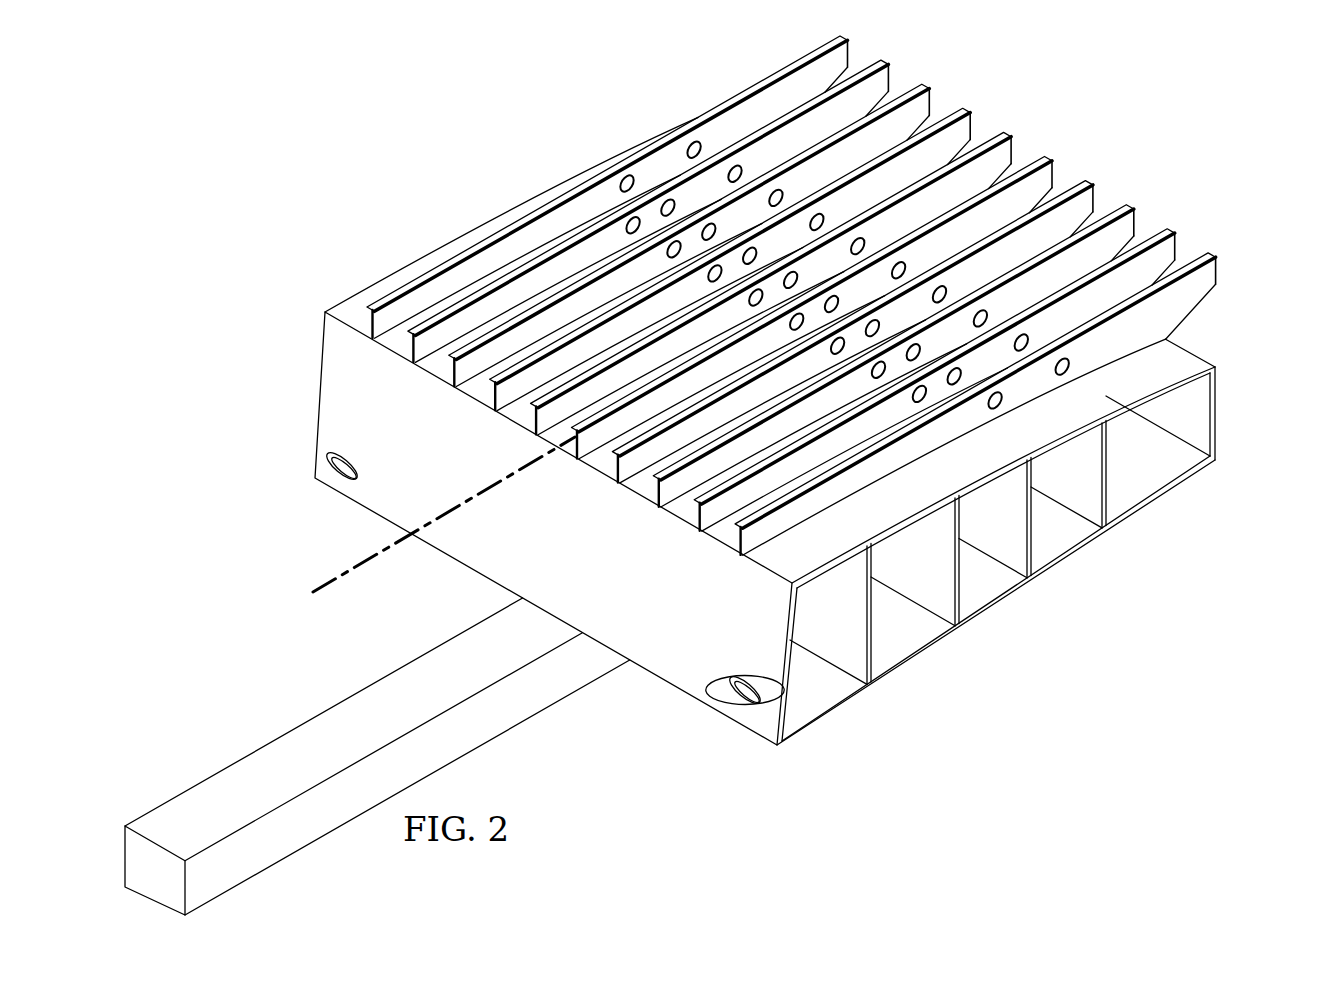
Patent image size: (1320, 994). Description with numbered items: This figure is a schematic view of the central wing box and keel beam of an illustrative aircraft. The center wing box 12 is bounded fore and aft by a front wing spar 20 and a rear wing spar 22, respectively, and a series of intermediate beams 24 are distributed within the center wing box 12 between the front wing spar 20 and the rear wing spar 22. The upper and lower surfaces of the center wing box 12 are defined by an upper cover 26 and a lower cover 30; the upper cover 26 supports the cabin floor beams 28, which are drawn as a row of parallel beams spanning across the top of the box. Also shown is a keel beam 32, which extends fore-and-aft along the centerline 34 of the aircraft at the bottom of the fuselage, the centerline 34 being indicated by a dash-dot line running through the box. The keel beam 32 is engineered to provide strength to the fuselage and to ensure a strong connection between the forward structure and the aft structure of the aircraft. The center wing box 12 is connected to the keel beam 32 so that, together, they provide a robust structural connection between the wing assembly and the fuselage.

The center wing box 12 is at (341, 152).
The front wing spar 20 is at (323, 373).
The rear wing spar 22 is at (1027, 556).
The intermediate beams 24 is at (1101, 495).
The upper cover 26 is at (1196, 370).
The cabin floor beams 28 is at (924, 90).
The lower cover 30 is at (894, 673).
The keel beam 32 is at (176, 806).
The centerline 34 is at (336, 582).